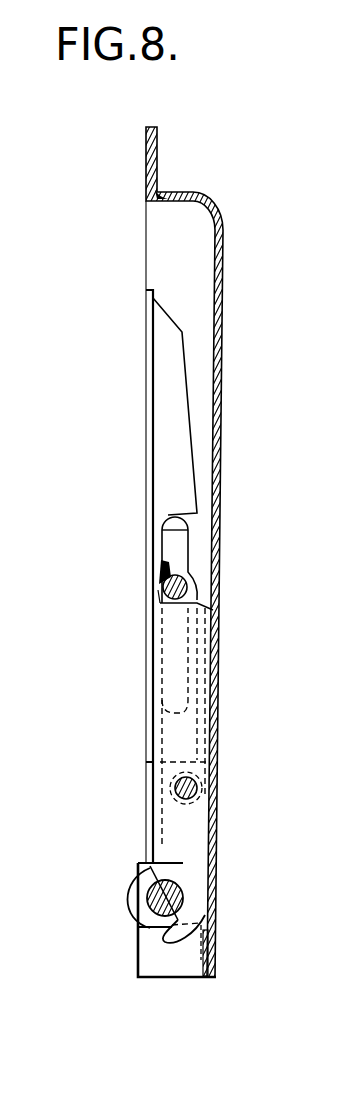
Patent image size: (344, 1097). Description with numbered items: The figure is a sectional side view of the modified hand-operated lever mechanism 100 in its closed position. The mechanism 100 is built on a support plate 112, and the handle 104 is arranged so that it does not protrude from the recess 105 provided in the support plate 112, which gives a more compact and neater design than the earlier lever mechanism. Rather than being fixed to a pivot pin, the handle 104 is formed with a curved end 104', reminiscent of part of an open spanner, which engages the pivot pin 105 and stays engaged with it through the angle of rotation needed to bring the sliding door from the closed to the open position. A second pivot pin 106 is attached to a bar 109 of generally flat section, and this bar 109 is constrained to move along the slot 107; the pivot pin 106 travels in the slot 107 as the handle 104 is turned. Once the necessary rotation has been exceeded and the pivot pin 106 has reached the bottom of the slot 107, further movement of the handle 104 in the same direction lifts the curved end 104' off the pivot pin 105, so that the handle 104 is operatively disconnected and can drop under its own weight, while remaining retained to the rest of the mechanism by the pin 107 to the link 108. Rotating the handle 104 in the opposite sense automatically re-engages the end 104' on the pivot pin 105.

The hand-operated lever mechanism 100 is at (143, 163).
The support plate 112 is at (148, 181).
The handle 104 is at (130, 576).
The curved end 104' is at (172, 552).
The pivot pin 105 is at (158, 905).
The pivot pin 106 is at (157, 595).
The slot 107 is at (160, 512).
The link 108 is at (165, 735).
The bar 109 is at (173, 555).